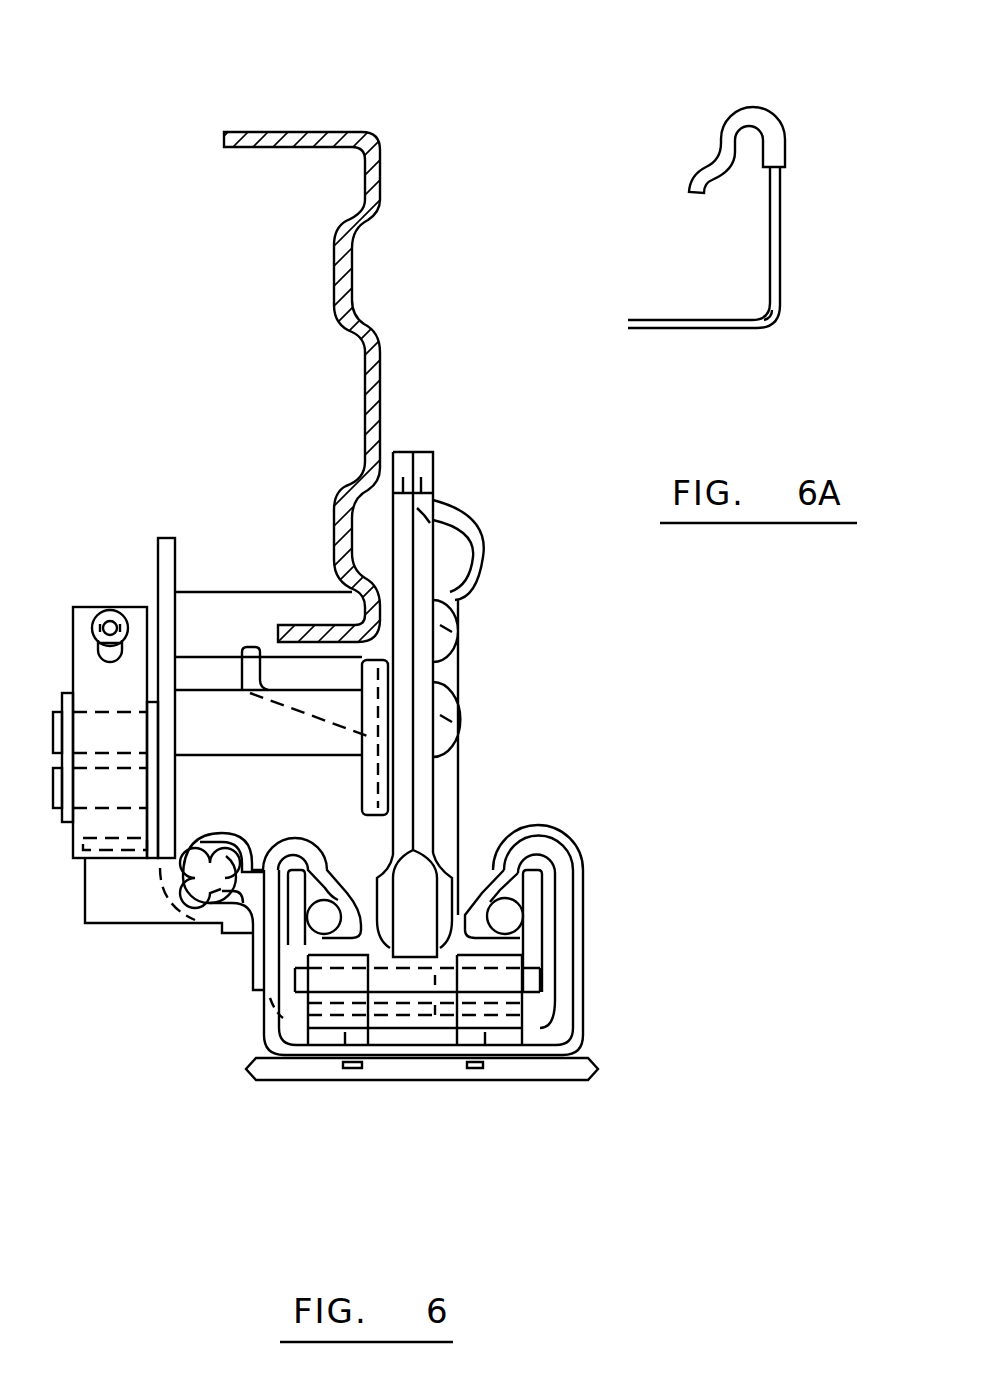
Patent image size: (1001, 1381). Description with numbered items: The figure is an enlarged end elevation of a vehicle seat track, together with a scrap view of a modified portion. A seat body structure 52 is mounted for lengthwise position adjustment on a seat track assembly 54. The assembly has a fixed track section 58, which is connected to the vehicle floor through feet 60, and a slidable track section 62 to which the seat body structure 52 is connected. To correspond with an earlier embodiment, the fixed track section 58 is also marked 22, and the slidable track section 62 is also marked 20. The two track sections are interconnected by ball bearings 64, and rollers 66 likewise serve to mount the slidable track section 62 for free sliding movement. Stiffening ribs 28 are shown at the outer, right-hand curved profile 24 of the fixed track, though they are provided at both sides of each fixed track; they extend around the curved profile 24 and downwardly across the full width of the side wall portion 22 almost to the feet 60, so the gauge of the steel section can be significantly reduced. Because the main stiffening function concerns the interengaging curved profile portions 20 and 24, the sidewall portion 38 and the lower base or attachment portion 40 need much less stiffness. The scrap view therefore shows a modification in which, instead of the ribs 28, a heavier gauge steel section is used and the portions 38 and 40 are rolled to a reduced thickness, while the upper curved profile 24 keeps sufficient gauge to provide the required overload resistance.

In FIG. 6, the slidable track section 20 is at (375, 942).
In FIG. 6, the fixed track section 22 is at (560, 957).
In FIG. 6, the curved profile 24 is at (293, 847).
In FIG. 6A, the curved profile 24 is at (758, 118).
In FIG. 6, the stiffening ribs 28 is at (553, 830).
In FIG. 6A, the sidewall portion 38 is at (778, 253).
In FIG. 6A, the lower base or attachment portion 40 is at (675, 328).
In FIG. 6, the seat body structure 52 is at (360, 389).
In FIG. 6, the seat track assembly 54 is at (503, 757).
In FIG. 6, the fixed track section 58 is at (288, 1043).
In FIG. 6A, the fixed track section 58 is at (764, 321).
In FIG. 6, the feet 60 is at (413, 1080).
In FIG. 6, the slidable track section 62 is at (428, 723).
In FIG. 6, the ball bearings 64 is at (323, 920).
In FIG. 6, the rollers 66 is at (333, 960).